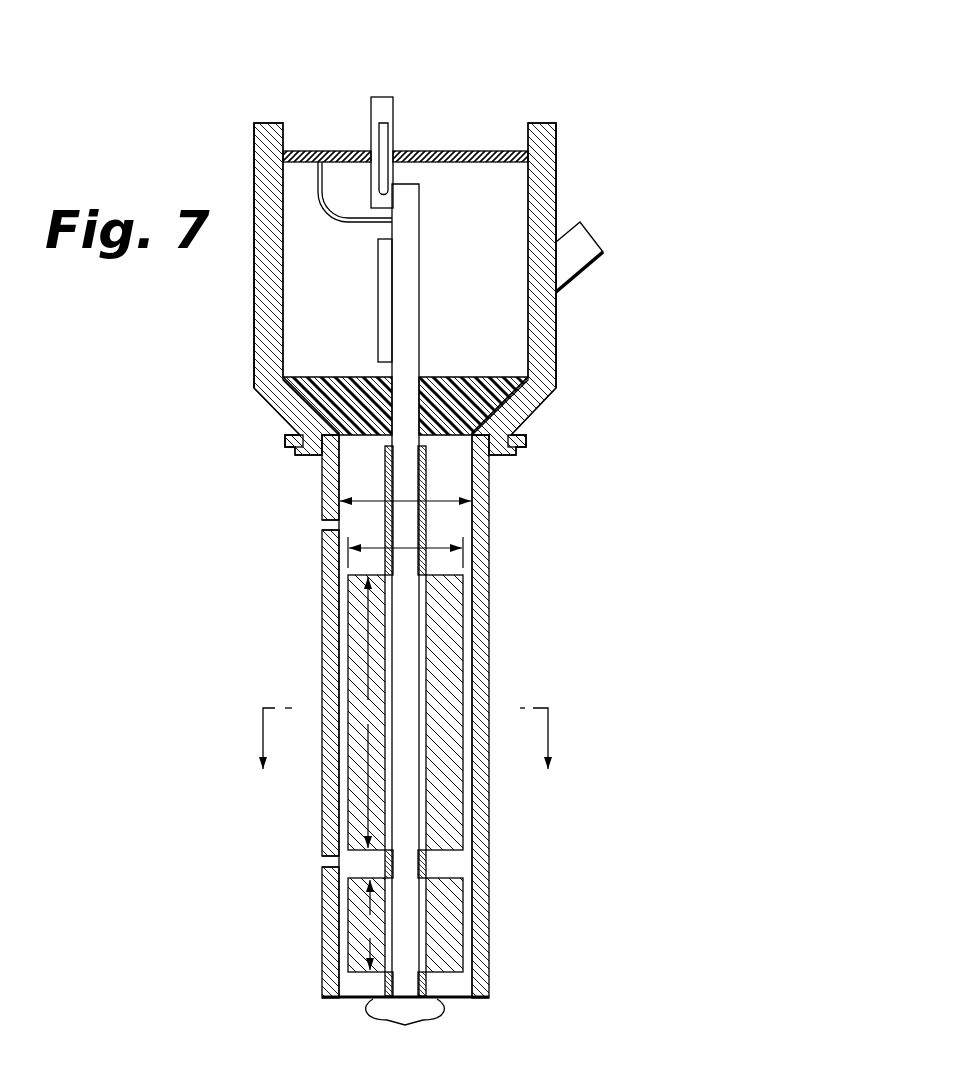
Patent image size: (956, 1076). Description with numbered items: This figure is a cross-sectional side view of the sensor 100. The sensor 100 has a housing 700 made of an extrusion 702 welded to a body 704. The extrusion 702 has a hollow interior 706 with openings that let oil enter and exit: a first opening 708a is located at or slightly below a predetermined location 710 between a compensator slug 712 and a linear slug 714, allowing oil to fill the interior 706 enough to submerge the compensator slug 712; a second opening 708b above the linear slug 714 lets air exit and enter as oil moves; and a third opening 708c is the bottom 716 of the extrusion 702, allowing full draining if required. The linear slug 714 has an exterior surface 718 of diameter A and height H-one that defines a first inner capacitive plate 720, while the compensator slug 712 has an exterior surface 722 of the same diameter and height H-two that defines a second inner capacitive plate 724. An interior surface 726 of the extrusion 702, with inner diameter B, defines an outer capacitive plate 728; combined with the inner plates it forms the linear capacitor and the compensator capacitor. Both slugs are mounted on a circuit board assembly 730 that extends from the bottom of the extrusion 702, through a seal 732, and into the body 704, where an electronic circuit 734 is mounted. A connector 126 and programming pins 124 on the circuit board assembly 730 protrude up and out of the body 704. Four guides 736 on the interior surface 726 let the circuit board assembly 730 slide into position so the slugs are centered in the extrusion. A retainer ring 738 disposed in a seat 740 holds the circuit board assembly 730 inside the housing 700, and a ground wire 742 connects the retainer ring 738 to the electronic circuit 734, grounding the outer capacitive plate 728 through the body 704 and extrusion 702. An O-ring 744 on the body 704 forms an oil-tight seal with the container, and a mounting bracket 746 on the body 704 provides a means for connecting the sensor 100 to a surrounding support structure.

The sensor 100 is at (530, 52).
The programming pins 124 is at (390, 128).
The connector 126 is at (371, 108).
The housing 700 is at (446, 575).
The extrusion 702 is at (480, 542).
The body 704 is at (545, 370).
The hollow interior 706 is at (362, 483).
The first opening 708a is at (322, 868).
The second opening 708b is at (321, 525).
The third opening 708c is at (355, 1001).
The predetermined location 710 is at (320, 862).
The compensator slug 712 is at (450, 912).
The linear slug 714 is at (455, 615).
The bottom 716 is at (352, 1033).
The exterior surface 718 is at (467, 660).
The first inner capacitive plate 720 is at (529, 712).
The exterior surface 722 is at (468, 927).
The second inner capacitive plate 724 is at (529, 925).
The interior surface 726 is at (472, 862).
The outer capacitive plate 728 is at (508, 847).
The circuit board assembly 730 is at (413, 228).
The seal 732 is at (487, 392).
The electronic circuit 734 is at (378, 293).
The guides 736 is at (405, 1036).
The retainer ring 738 is at (455, 150).
The seat 740 is at (500, 145).
The ground wire 742 is at (337, 213).
The O-ring 744 is at (285, 440).
The mounting bracket 746 is at (577, 253).